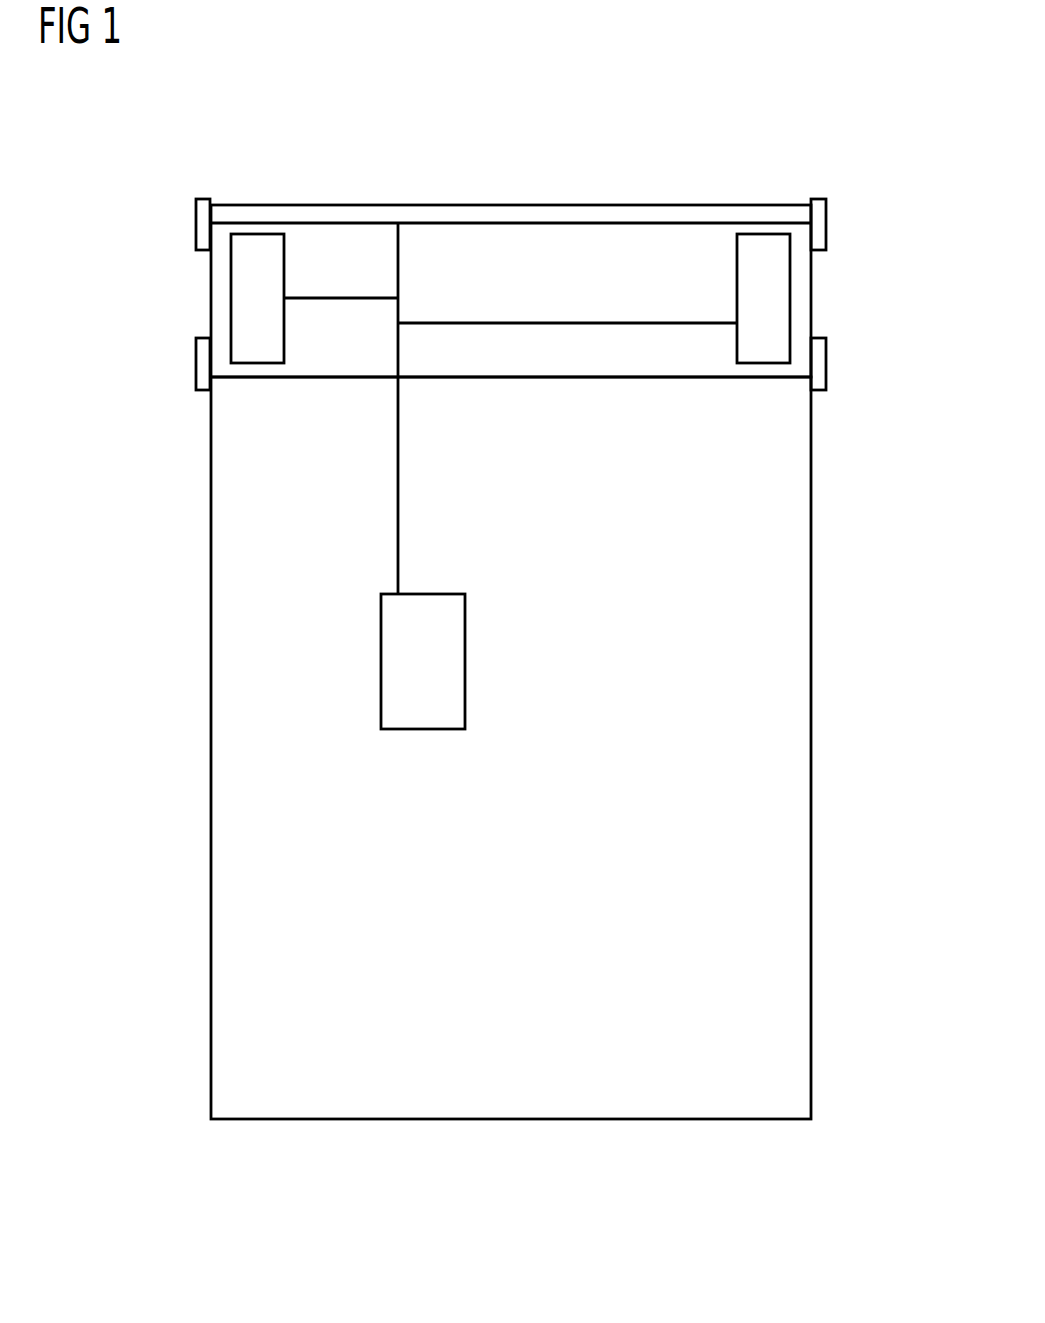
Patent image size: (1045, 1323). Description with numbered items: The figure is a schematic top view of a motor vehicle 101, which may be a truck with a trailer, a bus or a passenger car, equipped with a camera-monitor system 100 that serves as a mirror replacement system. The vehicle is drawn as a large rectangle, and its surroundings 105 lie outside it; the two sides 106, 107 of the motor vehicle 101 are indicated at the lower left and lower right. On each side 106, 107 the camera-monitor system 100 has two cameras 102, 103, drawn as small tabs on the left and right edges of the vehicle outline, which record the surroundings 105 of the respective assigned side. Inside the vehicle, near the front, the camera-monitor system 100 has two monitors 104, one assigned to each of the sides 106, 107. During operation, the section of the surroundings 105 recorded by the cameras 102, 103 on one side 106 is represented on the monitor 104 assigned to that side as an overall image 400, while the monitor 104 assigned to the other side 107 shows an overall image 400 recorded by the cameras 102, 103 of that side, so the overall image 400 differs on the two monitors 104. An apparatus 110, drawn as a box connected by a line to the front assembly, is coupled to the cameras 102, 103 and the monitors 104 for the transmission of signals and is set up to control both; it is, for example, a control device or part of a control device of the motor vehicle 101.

The camera-monitor system 100 is at (832, 128).
The motor vehicle 101 is at (811, 700).
The camera 102 is at (196, 360).
The camera 103 is at (196, 221).
The monitor 104 is at (258, 363).
The surroundings 105 is at (160, 722).
The side 106 is at (141, 1140).
The side 107 is at (880, 1140).
The apparatus 110 is at (465, 660).
The overall image 400 is at (275, 258).